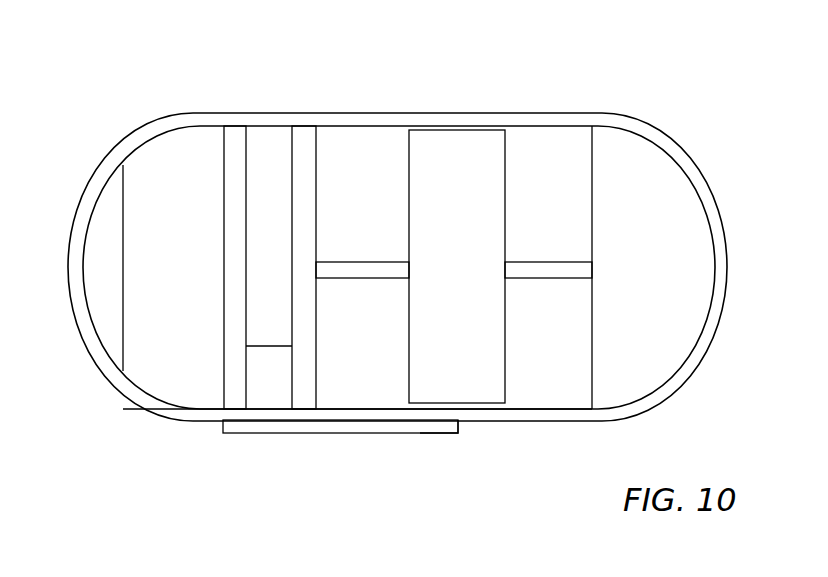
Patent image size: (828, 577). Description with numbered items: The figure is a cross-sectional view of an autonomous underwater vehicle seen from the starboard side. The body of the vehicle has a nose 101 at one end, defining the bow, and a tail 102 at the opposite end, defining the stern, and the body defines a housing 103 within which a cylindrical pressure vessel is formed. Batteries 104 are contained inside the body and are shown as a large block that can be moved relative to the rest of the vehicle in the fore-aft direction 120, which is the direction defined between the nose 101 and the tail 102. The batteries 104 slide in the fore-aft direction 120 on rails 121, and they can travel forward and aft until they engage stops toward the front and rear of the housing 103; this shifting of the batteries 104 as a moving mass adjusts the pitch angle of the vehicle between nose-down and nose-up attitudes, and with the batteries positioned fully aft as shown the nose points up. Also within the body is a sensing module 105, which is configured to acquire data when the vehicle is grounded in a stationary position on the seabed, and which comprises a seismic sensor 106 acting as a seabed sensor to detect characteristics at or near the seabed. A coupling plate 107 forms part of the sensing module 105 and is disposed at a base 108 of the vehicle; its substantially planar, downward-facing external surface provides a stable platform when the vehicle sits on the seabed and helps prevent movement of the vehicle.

The nose 101 is at (710, 330).
The tail 102 is at (82, 307).
The housing 103 is at (567, 422).
The batteries 104 is at (486, 150).
The sensing module 105 is at (255, 410).
The seismic sensor 106 is at (280, 408).
The coupling plate 107 is at (357, 427).
The base 108 is at (447, 433).
The fore-aft direction 120 is at (412, 58).
The rails 121 is at (360, 273).